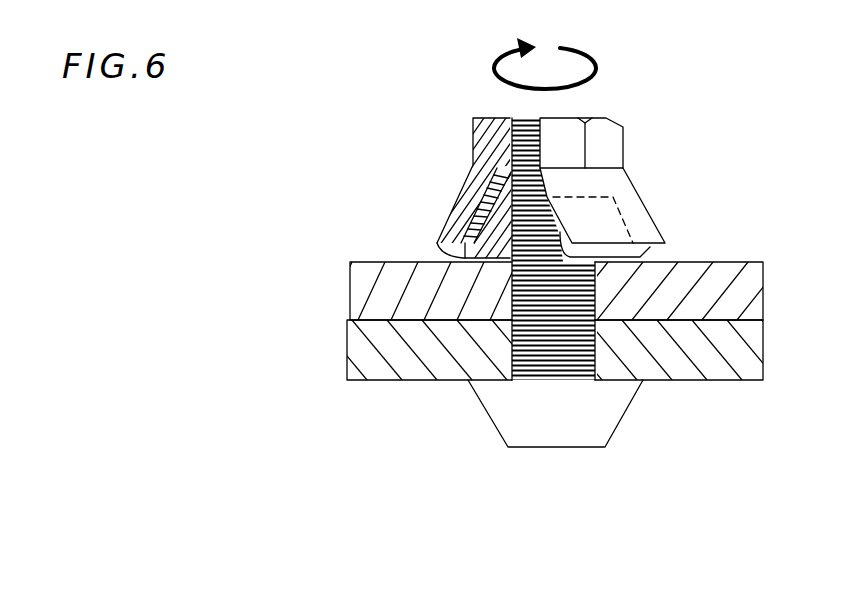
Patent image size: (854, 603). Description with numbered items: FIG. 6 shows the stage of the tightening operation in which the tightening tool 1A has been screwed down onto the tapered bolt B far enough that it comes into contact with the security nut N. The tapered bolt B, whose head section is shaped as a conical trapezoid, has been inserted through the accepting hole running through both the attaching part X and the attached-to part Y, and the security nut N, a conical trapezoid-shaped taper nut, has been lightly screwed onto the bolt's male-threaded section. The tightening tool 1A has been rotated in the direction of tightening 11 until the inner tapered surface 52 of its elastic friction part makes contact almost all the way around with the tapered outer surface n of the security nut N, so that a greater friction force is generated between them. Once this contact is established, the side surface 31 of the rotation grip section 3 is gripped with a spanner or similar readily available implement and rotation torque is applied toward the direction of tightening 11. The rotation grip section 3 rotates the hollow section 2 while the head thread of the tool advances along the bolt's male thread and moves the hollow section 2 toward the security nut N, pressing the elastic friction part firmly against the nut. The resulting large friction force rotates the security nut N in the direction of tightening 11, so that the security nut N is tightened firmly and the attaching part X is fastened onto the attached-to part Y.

The tightening tool 1A is at (415, 115).
The direction of tightening 11 is at (580, 53).
The side surface 31 is at (623, 138).
The rotation grip section 3 is at (632, 187).
The security nut N is at (630, 170).
The hollow section 2 is at (648, 203).
The tapered outer surface n is at (640, 257).
The attaching part X is at (740, 262).
The attached-to part Y is at (740, 380).
The inner tapered surface 52 is at (460, 258).
The tapered bolt B is at (567, 447).